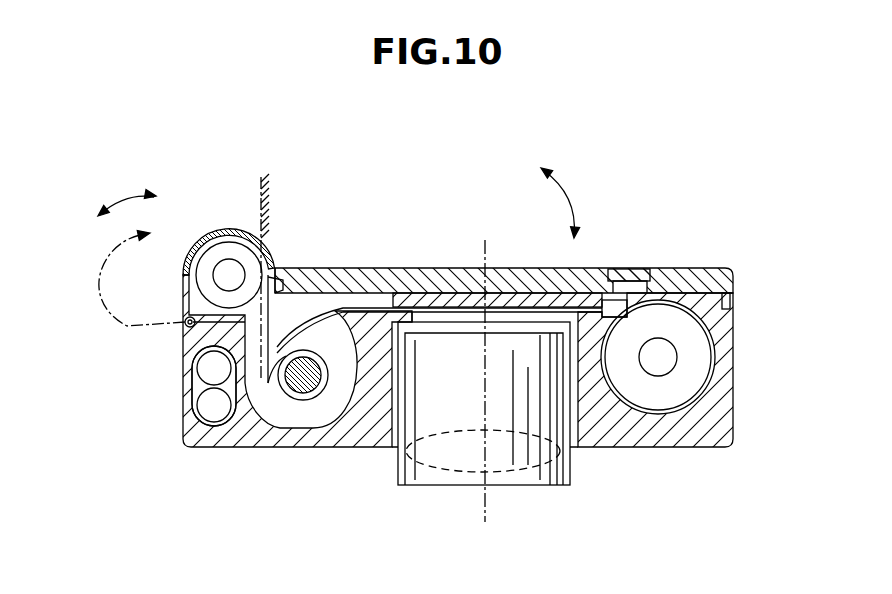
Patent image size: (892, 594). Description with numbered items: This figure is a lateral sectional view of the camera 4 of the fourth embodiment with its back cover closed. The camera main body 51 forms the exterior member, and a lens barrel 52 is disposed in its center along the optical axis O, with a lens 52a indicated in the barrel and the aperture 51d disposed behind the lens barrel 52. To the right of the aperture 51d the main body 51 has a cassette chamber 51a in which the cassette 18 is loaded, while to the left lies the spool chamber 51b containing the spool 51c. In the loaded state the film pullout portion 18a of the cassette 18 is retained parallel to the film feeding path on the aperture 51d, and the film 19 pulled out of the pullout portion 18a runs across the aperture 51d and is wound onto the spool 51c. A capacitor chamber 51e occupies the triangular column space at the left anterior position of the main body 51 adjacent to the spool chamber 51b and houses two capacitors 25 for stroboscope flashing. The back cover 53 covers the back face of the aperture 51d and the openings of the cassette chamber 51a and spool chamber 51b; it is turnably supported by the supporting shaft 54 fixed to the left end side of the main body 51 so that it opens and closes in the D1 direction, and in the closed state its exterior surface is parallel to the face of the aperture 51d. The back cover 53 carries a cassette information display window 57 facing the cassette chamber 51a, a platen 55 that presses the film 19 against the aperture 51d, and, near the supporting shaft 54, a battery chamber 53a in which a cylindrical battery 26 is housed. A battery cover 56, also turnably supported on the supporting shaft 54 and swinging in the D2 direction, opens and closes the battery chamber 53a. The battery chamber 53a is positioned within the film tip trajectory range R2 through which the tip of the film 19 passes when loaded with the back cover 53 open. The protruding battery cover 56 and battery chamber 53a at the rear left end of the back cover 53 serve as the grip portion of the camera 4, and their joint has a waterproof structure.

The camera 4 is at (688, 209).
The cassette 18 is at (662, 382).
The film pullout portion 18a is at (607, 302).
The film 19 is at (343, 305).
The capacitors 25 is at (207, 408).
The battery 26 is at (228, 253).
The camera main body 51 is at (652, 450).
The cassette chamber 51a is at (713, 360).
The spool chamber 51b is at (300, 428).
The spool 51c is at (291, 387).
The aperture 51d is at (455, 290).
The capacitor chamber 51e is at (213, 427).
The lens barrel 52 is at (572, 484).
The lens 52a is at (431, 462).
The back cover 53 is at (583, 272).
The battery chamber 53a is at (303, 290).
The supporting shaft 54 is at (185, 327).
The platen 55 is at (511, 297).
The battery cover 56 is at (207, 233).
The cassette information display window 57 is at (643, 268).
The optical axis O is at (487, 503).
The D1 direction D1 is at (565, 192).
The swing direction D2 is at (128, 200).
The film tip trajectory range R2 is at (266, 181).